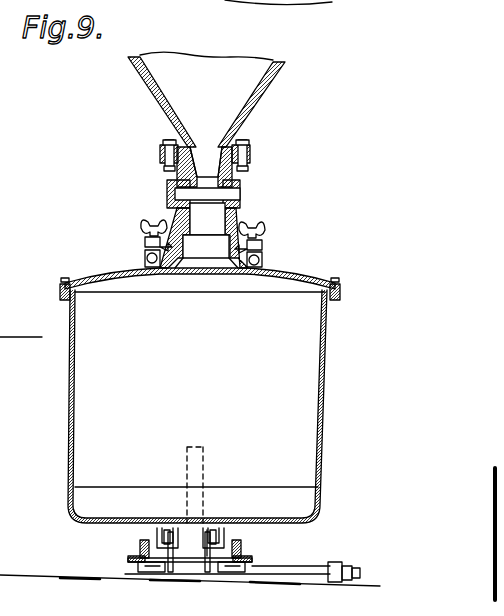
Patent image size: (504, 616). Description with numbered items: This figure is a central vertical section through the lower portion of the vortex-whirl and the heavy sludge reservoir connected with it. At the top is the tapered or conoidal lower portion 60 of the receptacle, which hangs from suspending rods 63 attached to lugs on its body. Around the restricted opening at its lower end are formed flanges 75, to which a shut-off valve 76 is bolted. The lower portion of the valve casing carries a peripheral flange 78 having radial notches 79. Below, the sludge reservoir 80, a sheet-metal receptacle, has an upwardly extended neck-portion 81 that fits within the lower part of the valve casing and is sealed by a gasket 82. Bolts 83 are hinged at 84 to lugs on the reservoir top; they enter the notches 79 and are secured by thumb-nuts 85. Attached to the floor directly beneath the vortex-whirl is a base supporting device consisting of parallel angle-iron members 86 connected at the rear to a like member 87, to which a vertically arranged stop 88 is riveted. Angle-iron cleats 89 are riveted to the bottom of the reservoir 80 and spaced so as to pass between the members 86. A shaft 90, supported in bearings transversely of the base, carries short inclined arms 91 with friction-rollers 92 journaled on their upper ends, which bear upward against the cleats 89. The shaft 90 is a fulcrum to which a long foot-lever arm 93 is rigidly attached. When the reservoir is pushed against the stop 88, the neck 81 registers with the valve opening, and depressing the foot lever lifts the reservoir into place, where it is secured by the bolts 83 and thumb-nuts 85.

The suspending rods 63 is at (327, 14).
The lower portion of the receptacle 60 is at (258, 103).
The flanges 75 is at (250, 151).
The shut-off valve 76 is at (240, 197).
The bolts 83 is at (232, 215).
The neck-portion 81 is at (206, 246).
The gasket 82 is at (230, 262).
The thumb-nuts 85 is at (157, 226).
The peripheral flange 78 is at (146, 238).
The radial notches 79 is at (152, 250).
The hinge 84 is at (144, 262).
The sludge reservoir 80 is at (67, 398).
The stop 88 is at (205, 447).
The inclined arms 91 is at (203, 530).
The shaft 90 is at (310, 567).
The foot-lever arm 93 is at (346, 564).
The angle-iron members 86 is at (140, 548).
The angle-iron cleats 89 is at (158, 530).
The friction-rollers 92 is at (167, 530).
The rear angle-iron member 87 is at (212, 560).